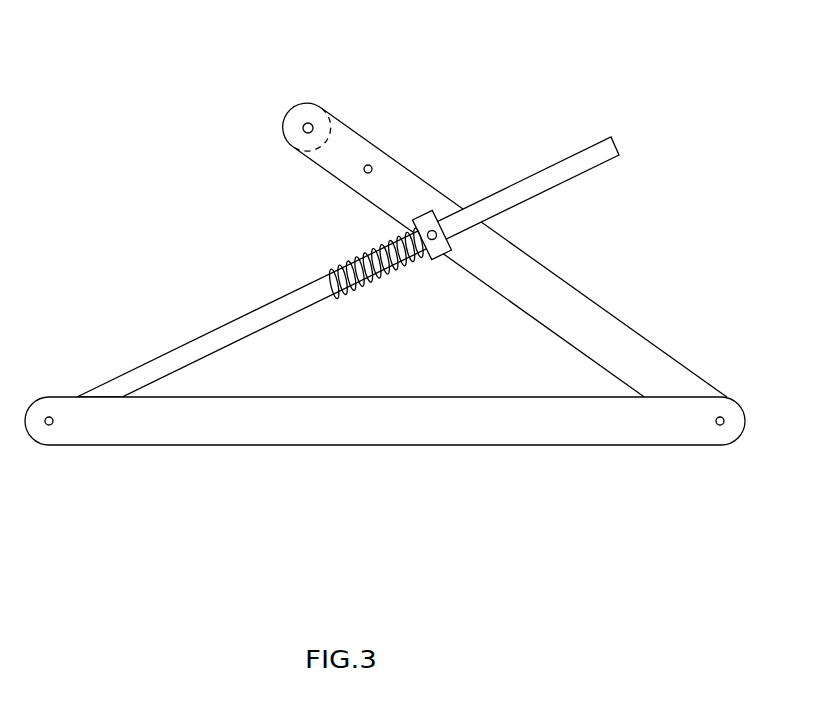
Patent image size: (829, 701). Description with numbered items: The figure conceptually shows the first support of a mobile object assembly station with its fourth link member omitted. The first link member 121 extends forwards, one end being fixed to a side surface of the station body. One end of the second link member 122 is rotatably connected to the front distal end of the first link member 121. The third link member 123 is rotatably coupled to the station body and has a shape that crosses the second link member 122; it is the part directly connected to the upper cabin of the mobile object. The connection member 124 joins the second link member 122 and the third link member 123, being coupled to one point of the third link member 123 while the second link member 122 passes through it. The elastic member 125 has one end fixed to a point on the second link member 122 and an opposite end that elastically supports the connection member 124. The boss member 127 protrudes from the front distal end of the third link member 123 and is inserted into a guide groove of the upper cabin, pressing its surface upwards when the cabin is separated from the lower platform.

The first link member 121 is at (370, 432).
The second link member 122 is at (225, 336).
The third link member 123 is at (588, 315).
The connection member 124 is at (425, 222).
The elastic member 125 is at (342, 262).
The boss member 127 is at (309, 110).